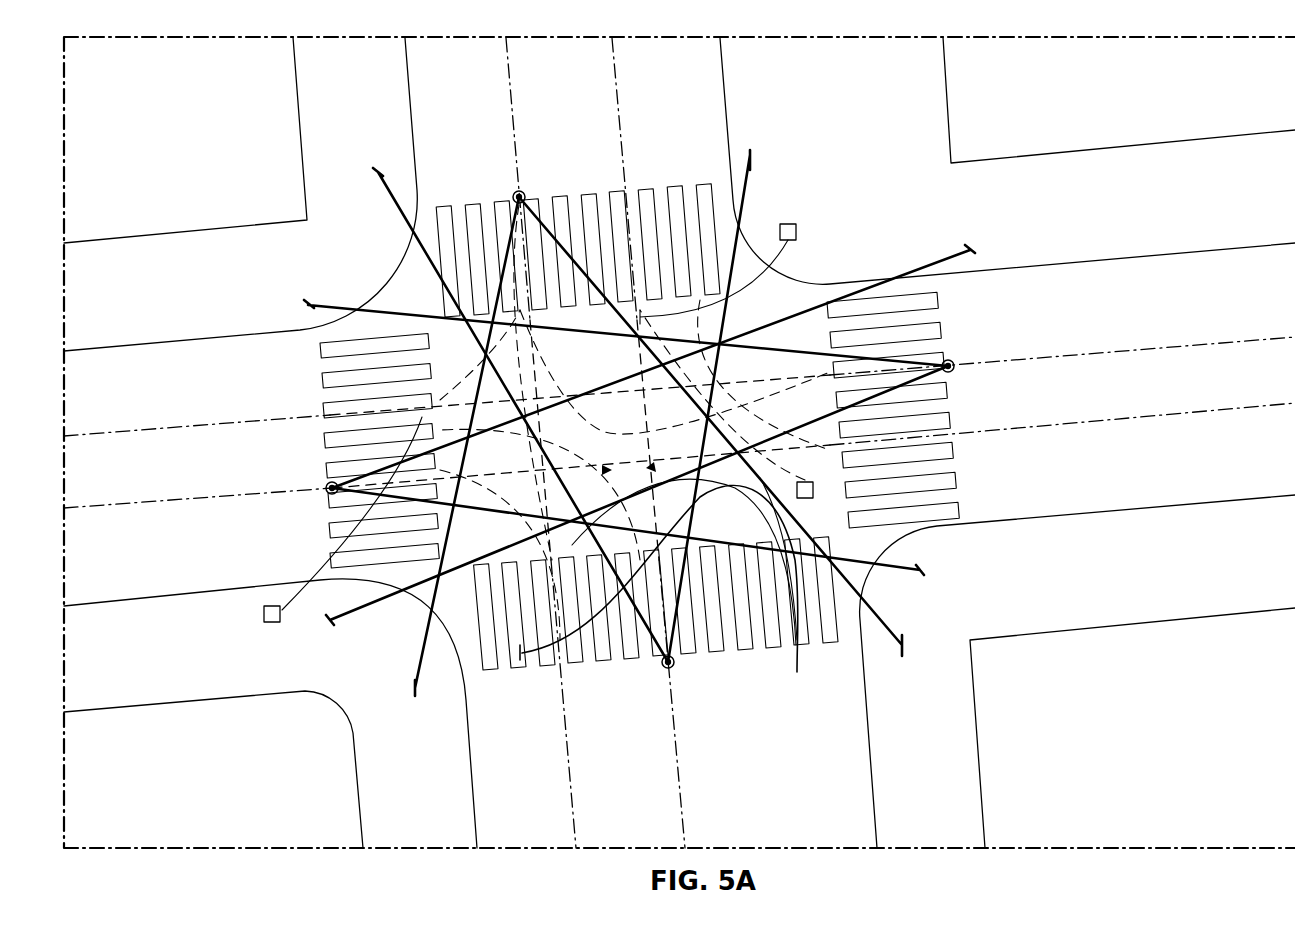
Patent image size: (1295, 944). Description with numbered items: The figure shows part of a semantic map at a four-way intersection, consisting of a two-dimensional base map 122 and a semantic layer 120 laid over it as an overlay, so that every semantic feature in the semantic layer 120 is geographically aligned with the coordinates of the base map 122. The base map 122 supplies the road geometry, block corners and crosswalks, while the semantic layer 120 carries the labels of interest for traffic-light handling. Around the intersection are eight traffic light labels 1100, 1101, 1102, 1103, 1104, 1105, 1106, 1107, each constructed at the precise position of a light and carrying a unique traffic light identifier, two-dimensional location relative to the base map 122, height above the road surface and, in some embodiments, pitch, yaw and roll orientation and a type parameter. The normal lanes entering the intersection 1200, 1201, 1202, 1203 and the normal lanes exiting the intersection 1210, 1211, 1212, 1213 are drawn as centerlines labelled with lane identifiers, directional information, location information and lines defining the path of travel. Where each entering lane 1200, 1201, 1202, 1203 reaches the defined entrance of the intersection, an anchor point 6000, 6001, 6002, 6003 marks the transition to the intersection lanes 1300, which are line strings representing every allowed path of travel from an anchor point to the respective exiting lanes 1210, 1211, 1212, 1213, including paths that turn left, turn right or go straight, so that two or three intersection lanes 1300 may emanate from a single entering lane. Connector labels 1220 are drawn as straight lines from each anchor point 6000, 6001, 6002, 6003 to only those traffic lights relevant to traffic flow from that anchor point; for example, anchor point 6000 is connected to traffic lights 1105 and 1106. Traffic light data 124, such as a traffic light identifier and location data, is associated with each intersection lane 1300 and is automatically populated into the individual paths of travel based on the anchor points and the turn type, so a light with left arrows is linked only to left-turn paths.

The semantic layer 120 is at (814, 66).
The base map 122 is at (1124, 764).
The traffic light data 124 is at (797, 235).
The traffic light label 1100 is at (334, 624).
The traffic light label 1101 is at (418, 690).
The traffic light label 1102 is at (905, 645).
The traffic light label 1103 is at (924, 572).
The traffic light label 1104 is at (967, 251).
The traffic light label 1105 is at (755, 162).
The traffic light label 1106 is at (378, 180).
The traffic light label 1107 is at (310, 304).
The normal lane entering the intersection 1200 is at (690, 818).
The normal lane entering the intersection 1201 is at (1245, 340).
The normal lane entering the intersection 1202 is at (513, 102).
The normal lane entering the intersection 1203 is at (124, 511).
The normal lane exiting the intersection 1210 is at (578, 818).
The normal lane exiting the intersection 1211 is at (1240, 413).
The normal lane exiting the intersection 1212 is at (627, 120).
The normal lane exiting the intersection 1213 is at (124, 430).
The connector label 1220 is at (521, 653).
The intersection lane 1300 is at (796, 625).
The anchor point 6000 is at (663, 667).
The anchor point 6001 is at (953, 363).
The anchor point 6002 is at (526, 196).
The anchor point 6003 is at (326, 491).